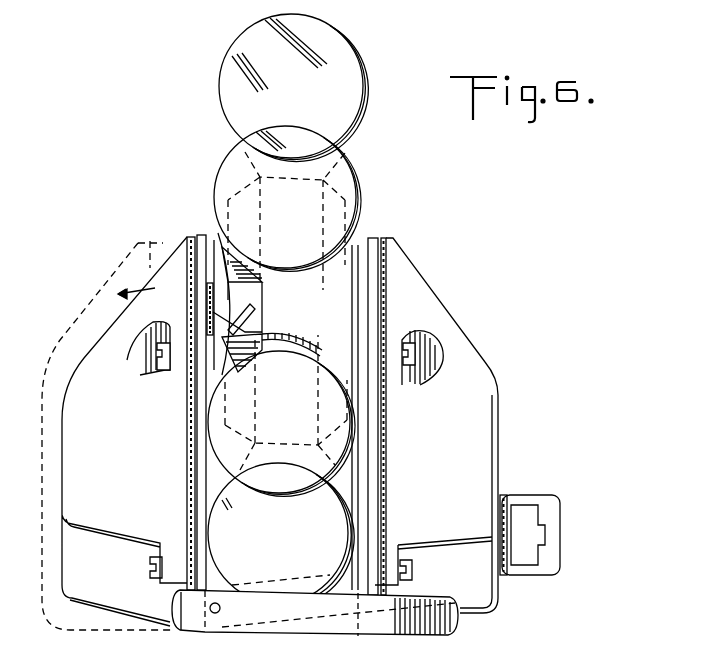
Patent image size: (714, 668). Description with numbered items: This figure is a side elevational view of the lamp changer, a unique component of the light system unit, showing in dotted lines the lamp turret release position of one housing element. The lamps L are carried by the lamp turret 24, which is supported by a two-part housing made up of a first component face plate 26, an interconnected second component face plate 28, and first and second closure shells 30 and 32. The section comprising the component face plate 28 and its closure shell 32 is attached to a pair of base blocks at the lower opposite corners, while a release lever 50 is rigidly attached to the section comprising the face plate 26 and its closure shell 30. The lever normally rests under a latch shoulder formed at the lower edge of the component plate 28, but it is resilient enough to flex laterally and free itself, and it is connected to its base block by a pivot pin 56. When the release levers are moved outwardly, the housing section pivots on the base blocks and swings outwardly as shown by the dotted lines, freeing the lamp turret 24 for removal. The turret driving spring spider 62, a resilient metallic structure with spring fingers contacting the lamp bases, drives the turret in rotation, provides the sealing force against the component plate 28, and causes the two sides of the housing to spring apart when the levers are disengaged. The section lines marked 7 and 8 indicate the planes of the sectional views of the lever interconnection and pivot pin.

The lens L is at (229, 73).
The lamp turret 24 is at (369, 240).
The first component face plate 26 is at (200, 258).
The second component face plate 28 is at (383, 240).
The first closure shell 30 is at (85, 363).
The second closure shell 32 is at (484, 362).
The release lever 50 is at (430, 636).
The pivot pin 56 is at (214, 614).
The turret driving spring spider 62 is at (214, 244).
The section line 7- 7 is at (366, 652).
The section line 8- 8 is at (145, 600).